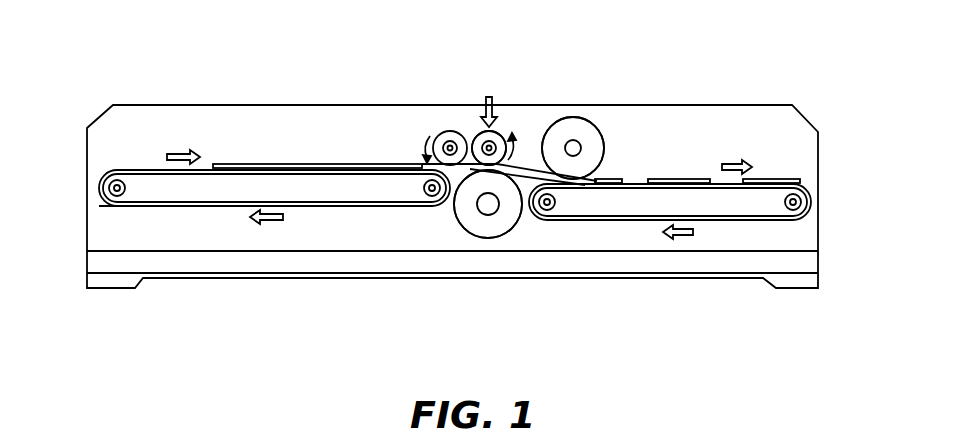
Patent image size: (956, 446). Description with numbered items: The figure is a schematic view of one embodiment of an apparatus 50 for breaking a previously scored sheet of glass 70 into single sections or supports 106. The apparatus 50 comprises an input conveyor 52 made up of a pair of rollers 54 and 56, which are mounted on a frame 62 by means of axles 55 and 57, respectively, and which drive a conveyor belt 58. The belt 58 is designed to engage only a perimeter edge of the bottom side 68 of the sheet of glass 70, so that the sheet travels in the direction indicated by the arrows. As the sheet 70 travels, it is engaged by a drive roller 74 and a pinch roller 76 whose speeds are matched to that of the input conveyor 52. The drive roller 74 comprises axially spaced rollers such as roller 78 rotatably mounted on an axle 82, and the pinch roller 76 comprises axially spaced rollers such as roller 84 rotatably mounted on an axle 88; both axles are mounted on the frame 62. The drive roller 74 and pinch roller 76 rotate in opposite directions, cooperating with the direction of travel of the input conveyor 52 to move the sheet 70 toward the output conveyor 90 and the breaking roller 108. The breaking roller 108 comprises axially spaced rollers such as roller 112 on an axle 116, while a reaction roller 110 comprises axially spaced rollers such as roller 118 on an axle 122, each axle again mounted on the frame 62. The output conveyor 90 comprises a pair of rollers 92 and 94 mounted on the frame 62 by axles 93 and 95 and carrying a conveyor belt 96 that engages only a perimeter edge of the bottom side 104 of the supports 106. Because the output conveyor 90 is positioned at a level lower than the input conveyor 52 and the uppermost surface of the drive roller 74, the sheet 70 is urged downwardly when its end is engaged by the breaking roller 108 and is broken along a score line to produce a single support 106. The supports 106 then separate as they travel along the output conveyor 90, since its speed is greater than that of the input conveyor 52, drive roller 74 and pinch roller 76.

The apparatus 50 is at (147, 304).
The input conveyor 52 is at (357, 213).
The roller 54 is at (111, 188).
The axle 55 is at (117, 200).
The roller 56 is at (430, 206).
The axle 57 is at (420, 166).
The conveyor belt 58 is at (163, 206).
The frame 62 is at (808, 148).
The bottom side 68 is at (238, 170).
The sheet of glass 70 is at (325, 164).
The drive roller 74 is at (508, 244).
The pinch roller 76 is at (511, 135).
The roller 78 is at (473, 223).
The axle 82 is at (490, 215).
The roller 84 is at (503, 137).
The axle 88 is at (478, 133).
The output conveyor 90 is at (608, 224).
The roller 92 is at (549, 220).
The axle 93 is at (597, 180).
The roller 94 is at (803, 218).
The axle 95 is at (803, 200).
The conveyor belt 96 is at (747, 222).
The bottom side 104 is at (672, 187).
The single section or support 106 is at (683, 178).
The breaking roller 108 is at (582, 118).
The reaction roller 110 is at (440, 133).
The roller 112 is at (558, 132).
The axle 116 is at (581, 147).
The roller 118 is at (450, 141).
The axle 122 is at (428, 146).